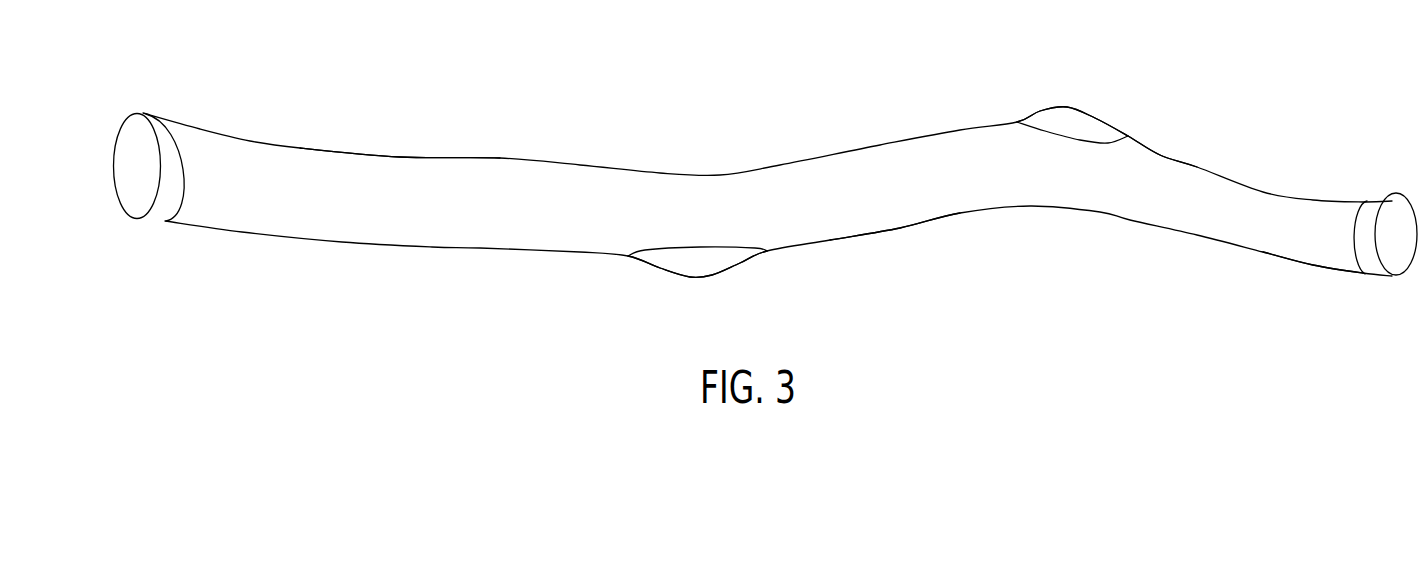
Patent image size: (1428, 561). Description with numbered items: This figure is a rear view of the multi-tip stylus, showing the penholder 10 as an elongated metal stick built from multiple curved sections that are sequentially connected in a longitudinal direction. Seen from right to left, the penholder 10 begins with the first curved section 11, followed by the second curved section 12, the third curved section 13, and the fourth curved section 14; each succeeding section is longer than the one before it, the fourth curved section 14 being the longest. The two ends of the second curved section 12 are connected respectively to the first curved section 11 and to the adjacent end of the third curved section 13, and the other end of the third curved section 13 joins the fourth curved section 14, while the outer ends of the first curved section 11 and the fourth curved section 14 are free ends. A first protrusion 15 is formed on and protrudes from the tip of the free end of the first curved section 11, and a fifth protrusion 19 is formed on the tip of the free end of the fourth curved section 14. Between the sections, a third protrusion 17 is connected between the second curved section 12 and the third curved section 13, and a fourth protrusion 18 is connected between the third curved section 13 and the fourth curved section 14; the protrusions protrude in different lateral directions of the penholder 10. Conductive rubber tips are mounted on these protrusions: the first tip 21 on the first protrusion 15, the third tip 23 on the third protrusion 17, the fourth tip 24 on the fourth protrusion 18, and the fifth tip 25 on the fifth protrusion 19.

The penholder 10 is at (881, 122).
The first curved section 11 is at (1323, 255).
The second curved section 12 is at (1155, 167).
The third curved section 13 is at (895, 207).
The fourth curved section 14 is at (380, 177).
The first protrusion 15 is at (1383, 284).
The third protrusion 17 is at (1058, 94).
The fourth protrusion 18 is at (715, 279).
The fifth protrusion 19 is at (148, 100).
The first tip 21 is at (1390, 208).
The third tip 23 is at (1073, 120).
The fourth tip 24 is at (688, 257).
The fifth tip 25 is at (160, 138).